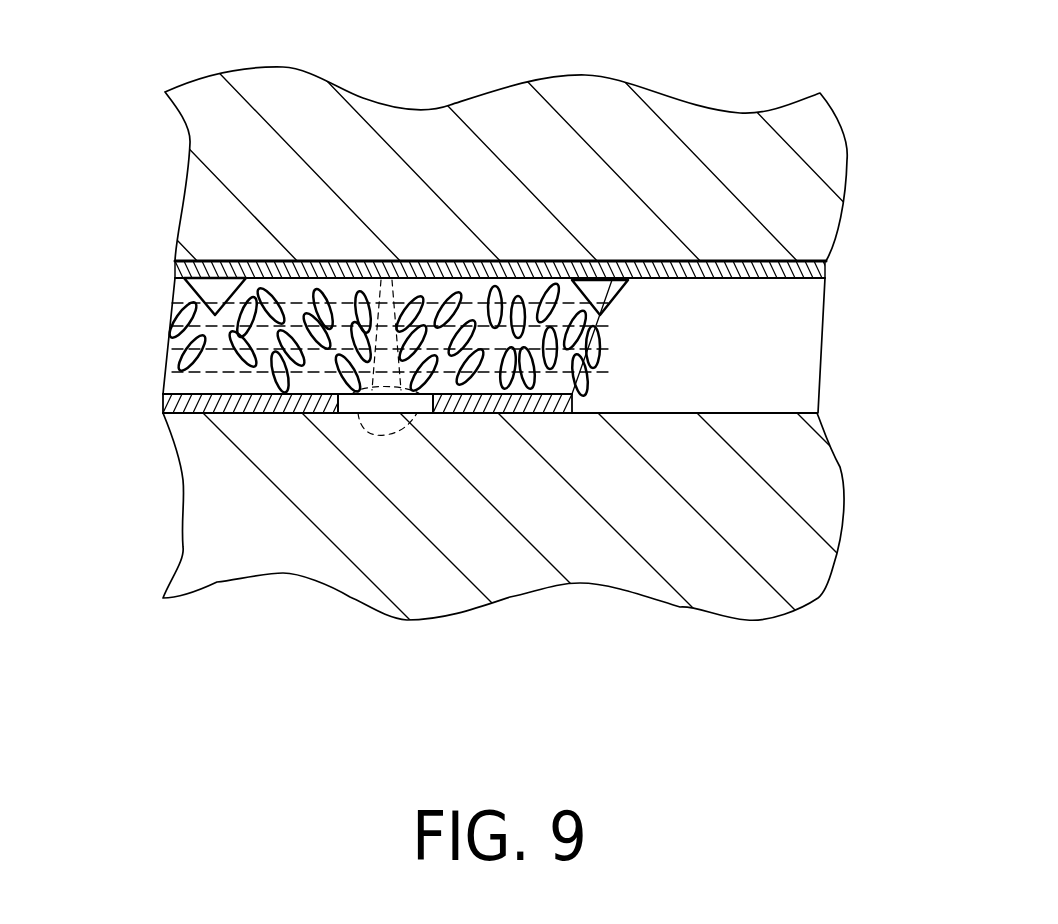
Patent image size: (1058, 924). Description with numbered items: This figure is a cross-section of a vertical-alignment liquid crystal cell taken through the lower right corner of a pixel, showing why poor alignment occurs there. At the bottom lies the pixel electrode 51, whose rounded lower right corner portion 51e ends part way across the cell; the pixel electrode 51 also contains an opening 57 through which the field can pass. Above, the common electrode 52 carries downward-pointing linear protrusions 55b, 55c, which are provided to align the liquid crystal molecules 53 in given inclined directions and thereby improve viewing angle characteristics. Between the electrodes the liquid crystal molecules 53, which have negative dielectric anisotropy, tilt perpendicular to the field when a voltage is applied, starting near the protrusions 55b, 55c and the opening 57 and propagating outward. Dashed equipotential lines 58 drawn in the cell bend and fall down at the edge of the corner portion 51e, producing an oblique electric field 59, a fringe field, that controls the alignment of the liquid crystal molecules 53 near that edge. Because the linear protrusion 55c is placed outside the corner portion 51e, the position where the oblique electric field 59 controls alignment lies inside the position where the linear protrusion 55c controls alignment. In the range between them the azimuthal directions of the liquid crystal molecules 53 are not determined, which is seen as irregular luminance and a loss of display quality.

The pixel electrode 51 is at (163, 413).
The lower right corner portion 51e is at (503, 413).
The common electrode 52 is at (730, 279).
The liquid crystal molecules 53 is at (607, 378).
The linear protrusion 55b is at (213, 290).
The linear protrusion 55c is at (598, 305).
The opening 57 is at (360, 417).
The equipotential lines 58 is at (295, 306).
The oblique electric field 59 is at (613, 310).